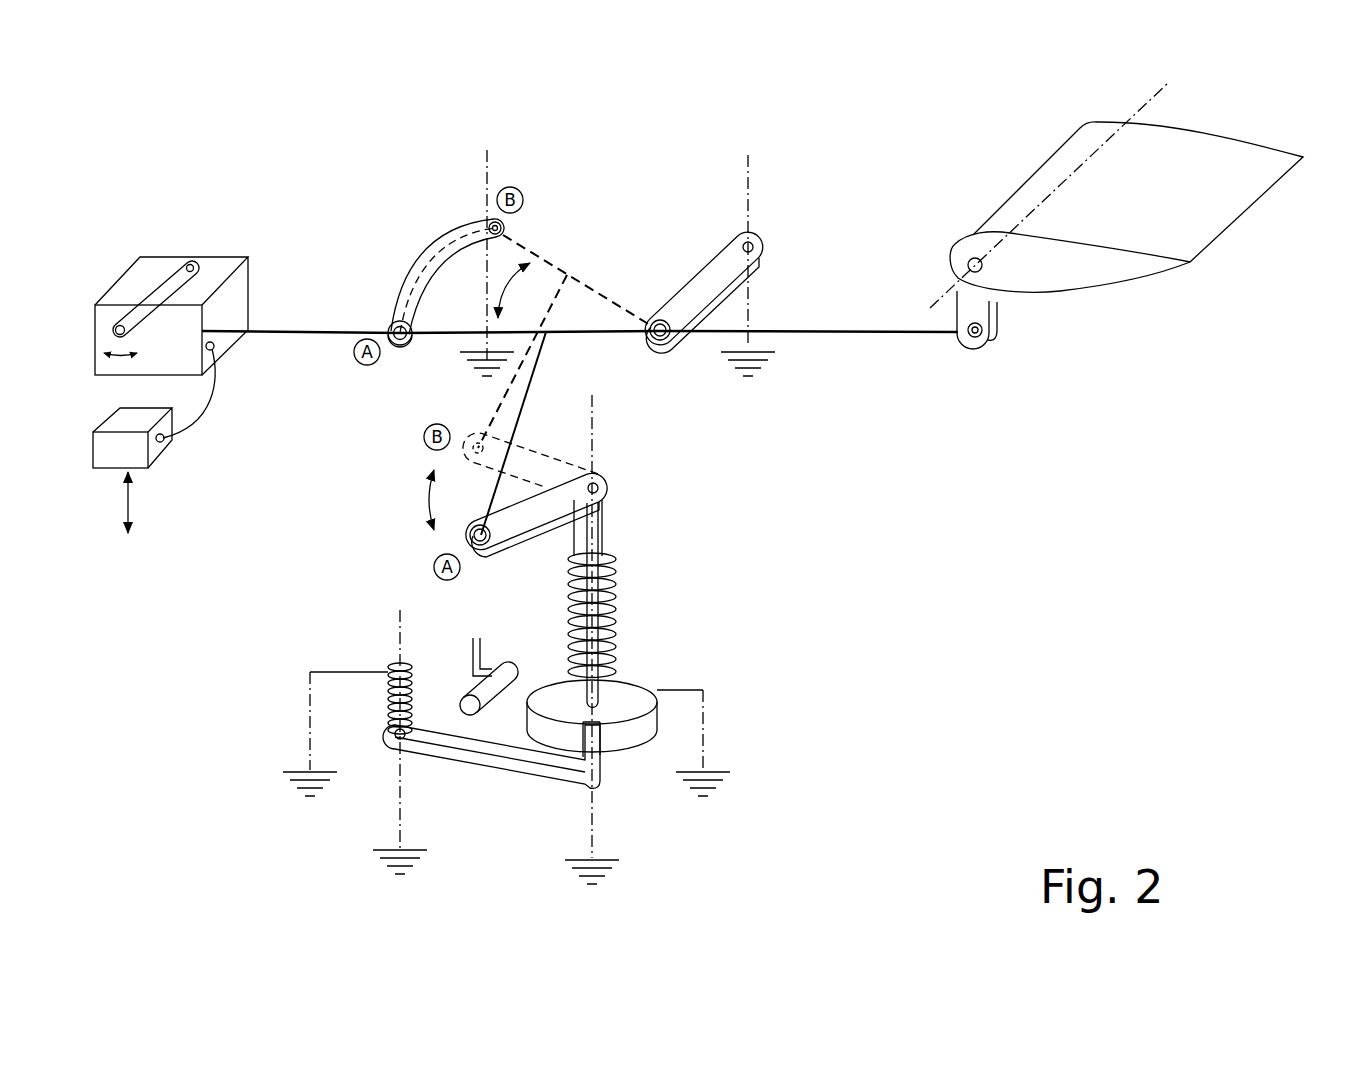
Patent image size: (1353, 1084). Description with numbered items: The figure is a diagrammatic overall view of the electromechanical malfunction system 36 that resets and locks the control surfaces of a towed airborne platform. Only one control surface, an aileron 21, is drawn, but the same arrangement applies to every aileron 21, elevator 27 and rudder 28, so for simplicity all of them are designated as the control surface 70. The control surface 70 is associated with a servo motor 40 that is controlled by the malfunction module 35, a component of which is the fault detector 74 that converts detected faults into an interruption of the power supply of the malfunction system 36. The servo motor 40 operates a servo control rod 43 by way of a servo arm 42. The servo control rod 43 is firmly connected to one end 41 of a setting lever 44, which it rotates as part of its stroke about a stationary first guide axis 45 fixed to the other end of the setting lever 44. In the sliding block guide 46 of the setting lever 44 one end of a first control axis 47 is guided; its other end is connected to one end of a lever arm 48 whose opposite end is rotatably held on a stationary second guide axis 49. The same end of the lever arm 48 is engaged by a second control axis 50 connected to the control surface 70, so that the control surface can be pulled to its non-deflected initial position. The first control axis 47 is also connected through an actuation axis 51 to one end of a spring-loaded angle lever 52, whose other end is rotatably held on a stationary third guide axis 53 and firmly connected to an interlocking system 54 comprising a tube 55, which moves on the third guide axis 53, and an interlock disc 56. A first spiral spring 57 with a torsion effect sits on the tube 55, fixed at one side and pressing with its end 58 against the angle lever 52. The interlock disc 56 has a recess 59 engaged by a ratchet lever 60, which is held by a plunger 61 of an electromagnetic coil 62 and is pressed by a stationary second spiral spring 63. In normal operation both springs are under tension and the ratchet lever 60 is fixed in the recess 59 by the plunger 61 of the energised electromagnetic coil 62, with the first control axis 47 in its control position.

The malfunction system 36 is at (795, 492).
The servo motor 40 is at (222, 274).
The servo arm 42 is at (170, 288).
The servo control rod 43 is at (316, 330).
The end of setting lever 41 is at (386, 328).
The setting lever 44 is at (454, 234).
The first guide axis 45 is at (487, 182).
The sliding block guide 46 is at (420, 284).
The first control axis 47 is at (585, 330).
The lever arm 48 is at (720, 278).
The second guide axis 49 is at (750, 176).
The second control axis 50 is at (809, 310).
The control surface 70 is at (1116, 216).
The aileron 21 is at (1116, 216).
The elevator 27 is at (1116, 216).
The rudder 28 is at (1048, 272).
The actuation axis 51 is at (518, 372).
The angle lever 52 is at (555, 503).
The third guide axis 53 is at (592, 808).
The interlocking system 54 is at (647, 764).
The tube 55 is at (590, 536).
The interlock disc 56 is at (623, 710).
The first spiral spring 57 is at (603, 625).
The end of first spiral spring 58 is at (573, 543).
The recess 59 is at (600, 728).
The ratchet lever 60 is at (520, 757).
The plunger 61 is at (455, 728).
The electromagnetic coil 62 is at (486, 696).
The second spiral spring 63 is at (388, 697).
The malfunction module 35 is at (160, 487).
The fault detector 74 is at (132, 450).